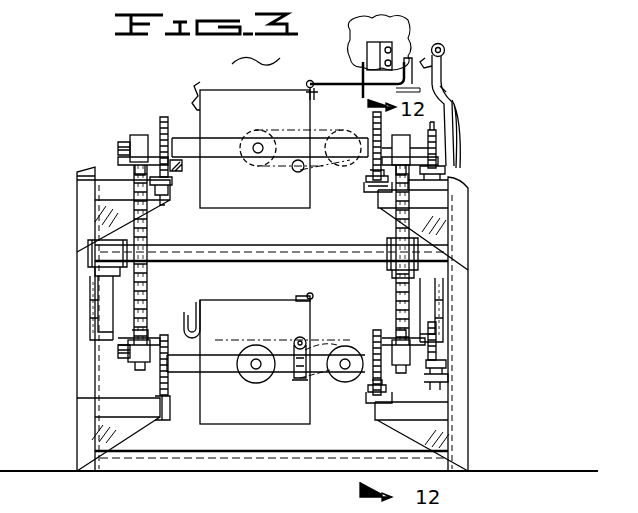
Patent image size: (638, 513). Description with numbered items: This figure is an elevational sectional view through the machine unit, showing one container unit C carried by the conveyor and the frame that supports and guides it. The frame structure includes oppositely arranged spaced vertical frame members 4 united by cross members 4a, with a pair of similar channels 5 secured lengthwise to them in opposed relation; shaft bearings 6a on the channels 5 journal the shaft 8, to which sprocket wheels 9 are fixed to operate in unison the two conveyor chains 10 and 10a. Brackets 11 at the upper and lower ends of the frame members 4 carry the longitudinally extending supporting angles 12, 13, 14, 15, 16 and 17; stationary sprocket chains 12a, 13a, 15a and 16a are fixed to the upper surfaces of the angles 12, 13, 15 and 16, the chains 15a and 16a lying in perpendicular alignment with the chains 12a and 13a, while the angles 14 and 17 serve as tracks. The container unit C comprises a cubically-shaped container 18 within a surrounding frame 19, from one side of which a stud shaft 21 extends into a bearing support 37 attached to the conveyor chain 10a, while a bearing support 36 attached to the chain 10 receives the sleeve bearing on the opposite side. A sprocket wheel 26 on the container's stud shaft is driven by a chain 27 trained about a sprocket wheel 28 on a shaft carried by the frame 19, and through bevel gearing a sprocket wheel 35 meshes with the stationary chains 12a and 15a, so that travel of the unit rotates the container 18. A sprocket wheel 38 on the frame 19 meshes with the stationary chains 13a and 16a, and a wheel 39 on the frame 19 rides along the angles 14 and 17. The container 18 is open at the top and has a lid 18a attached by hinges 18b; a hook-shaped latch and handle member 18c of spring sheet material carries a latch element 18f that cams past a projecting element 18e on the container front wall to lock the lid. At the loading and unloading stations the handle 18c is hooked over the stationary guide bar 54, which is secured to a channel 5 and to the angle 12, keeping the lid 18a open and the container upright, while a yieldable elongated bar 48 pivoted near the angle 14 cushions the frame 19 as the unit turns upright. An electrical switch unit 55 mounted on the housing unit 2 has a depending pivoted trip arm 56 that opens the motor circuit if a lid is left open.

The housing unit 2 is at (392, 30).
The vertical frame members 4 is at (80, 361).
The cross members 4a is at (282, 460).
The channels 5 is at (98, 320).
The shaft bearings 6a is at (88, 258).
The shaft 8 is at (288, 250).
The sprocket wheels 9 is at (150, 285).
The conveyor chain 10 is at (400, 366).
The conveyor chain 10a is at (142, 360).
The brackets 11 is at (85, 212).
The supporting angle 12 is at (432, 184).
The sprocket chain 12a is at (432, 168).
The supporting angle 13 is at (366, 190).
The sprocket chain 13a is at (366, 178).
The supporting angle 14 is at (165, 198).
The supporting angle 15 is at (448, 378).
The sprocket chain 15a is at (446, 364).
The supporting angle 16 is at (368, 400).
The sprocket chain 16a is at (368, 388).
The supporting angle 17 is at (163, 420).
The container 18 is at (247, 200).
The lid 18a is at (446, 92).
The hinges 18b is at (318, 94).
The hook-shaped latch and handle member 18c is at (446, 58).
The projecting element 18e is at (195, 88).
The locking or latch element 18f is at (428, 58).
The container surrounding frame 19 is at (233, 152).
The stud shaft 21 is at (123, 140).
The sprocket wheel 26 is at (252, 378).
The chain 27 is at (294, 382).
The sprocket wheel 28 is at (344, 348).
The sprocket wheel 35 is at (437, 140).
The bearing support 36 is at (400, 128).
The bearing support 37 is at (139, 135).
The sprocket wheel 38 is at (372, 130).
The wheel 39 is at (163, 116).
The elongated bar 48 is at (182, 170).
The stationary guide bar 54 is at (458, 110).
The electrical switch unit 55 is at (365, 52).
The trip arm 56 is at (362, 84).
The container units C is at (256, 51).